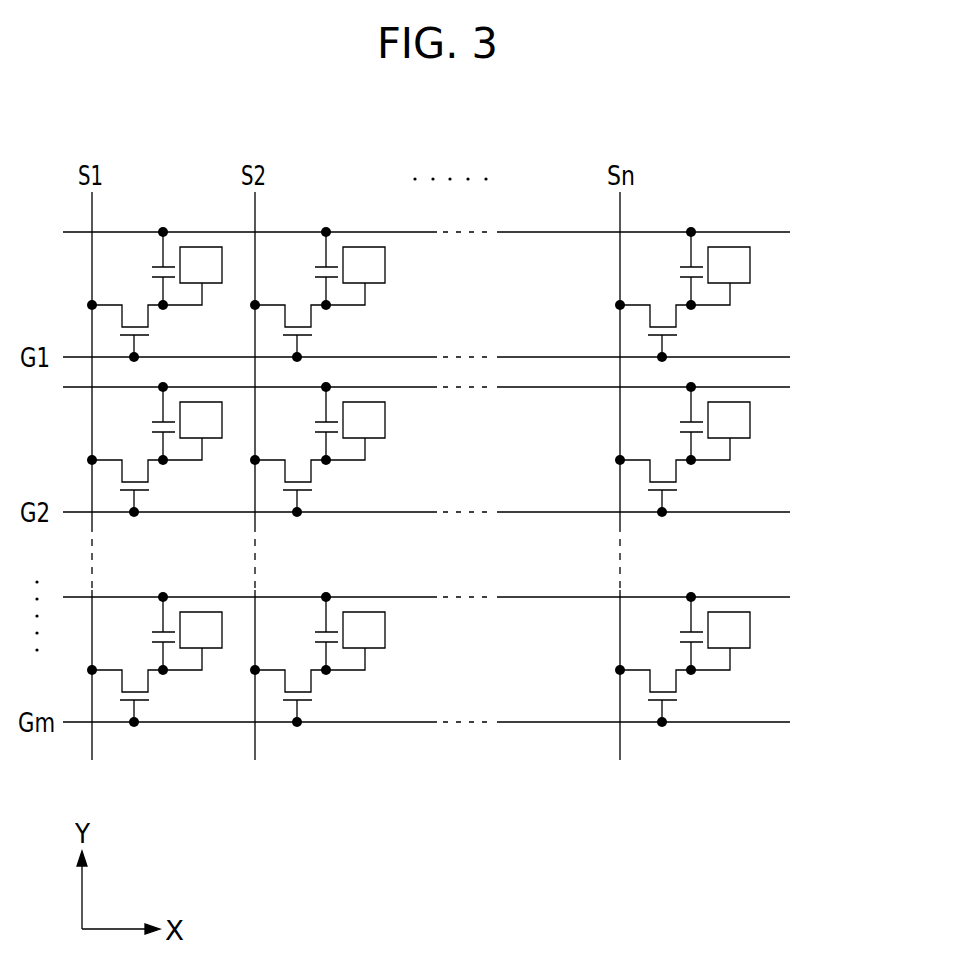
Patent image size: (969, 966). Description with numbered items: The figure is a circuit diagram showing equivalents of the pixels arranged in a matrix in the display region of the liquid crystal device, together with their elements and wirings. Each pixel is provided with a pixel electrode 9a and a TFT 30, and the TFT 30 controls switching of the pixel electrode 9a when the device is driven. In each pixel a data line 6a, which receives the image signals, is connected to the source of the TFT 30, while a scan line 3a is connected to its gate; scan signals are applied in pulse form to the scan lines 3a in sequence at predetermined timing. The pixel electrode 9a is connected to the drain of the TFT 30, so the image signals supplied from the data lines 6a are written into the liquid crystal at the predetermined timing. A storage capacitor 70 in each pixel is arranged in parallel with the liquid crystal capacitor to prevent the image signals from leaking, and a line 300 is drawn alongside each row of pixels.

The data line 6a is at (92, 209).
The capacitor line 300 is at (773, 232).
The scan line 3a is at (773, 357).
The storage capacitor 70 is at (152, 275).
The pixel electrode 9a is at (750, 275).
The TFT 30 is at (112, 320).